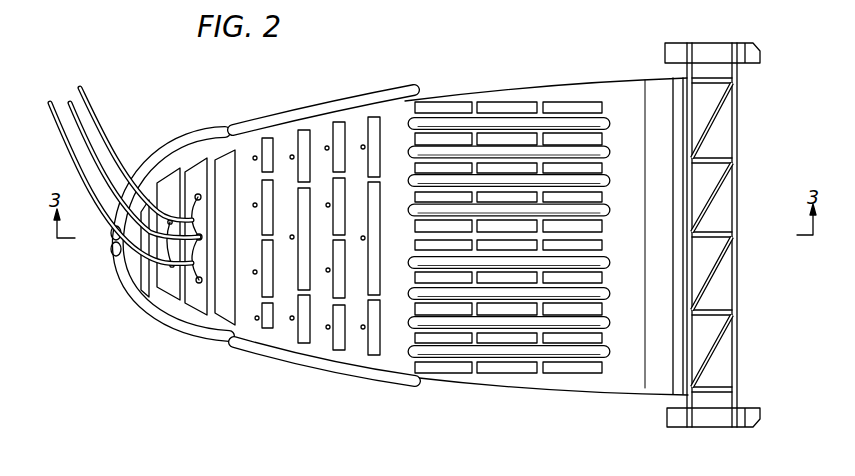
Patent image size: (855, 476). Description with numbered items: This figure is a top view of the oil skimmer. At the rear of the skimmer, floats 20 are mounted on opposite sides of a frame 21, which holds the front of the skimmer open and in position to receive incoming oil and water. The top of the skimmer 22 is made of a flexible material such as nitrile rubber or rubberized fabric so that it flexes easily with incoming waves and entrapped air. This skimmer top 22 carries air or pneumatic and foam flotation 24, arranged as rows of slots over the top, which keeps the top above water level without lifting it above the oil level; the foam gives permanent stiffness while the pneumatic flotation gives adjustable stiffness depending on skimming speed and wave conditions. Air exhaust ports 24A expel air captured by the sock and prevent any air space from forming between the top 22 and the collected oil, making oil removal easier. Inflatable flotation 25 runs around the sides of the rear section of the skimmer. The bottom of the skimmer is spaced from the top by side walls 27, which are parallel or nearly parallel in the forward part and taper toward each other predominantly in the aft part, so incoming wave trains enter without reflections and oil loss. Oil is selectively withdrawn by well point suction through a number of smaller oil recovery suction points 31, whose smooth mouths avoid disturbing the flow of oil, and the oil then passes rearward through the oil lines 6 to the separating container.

The oil lines 6 is at (97, 123).
The floats 20 is at (753, 43).
The frame 21 is at (736, 132).
The top of the skimmer 22 is at (637, 378).
The air or pneumatic and foam flotation 24 is at (300, 130).
The air exhaust ports 24A is at (291, 321).
The inflatable flotation 25 is at (412, 353).
The side walls 27 is at (485, 388).
The oil recovery suction points 31 is at (199, 283).